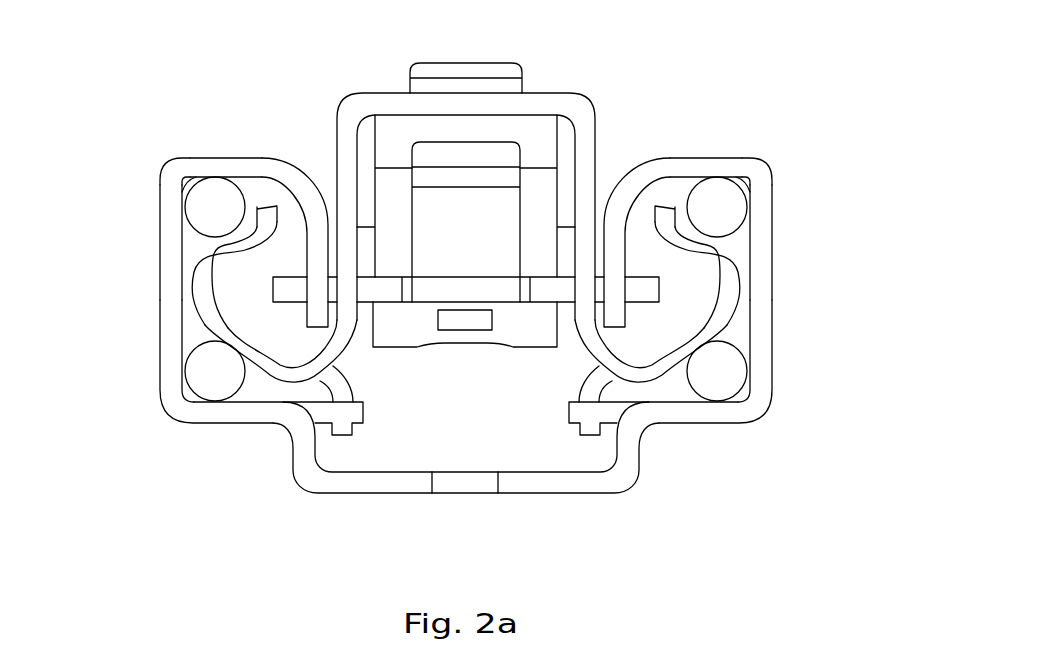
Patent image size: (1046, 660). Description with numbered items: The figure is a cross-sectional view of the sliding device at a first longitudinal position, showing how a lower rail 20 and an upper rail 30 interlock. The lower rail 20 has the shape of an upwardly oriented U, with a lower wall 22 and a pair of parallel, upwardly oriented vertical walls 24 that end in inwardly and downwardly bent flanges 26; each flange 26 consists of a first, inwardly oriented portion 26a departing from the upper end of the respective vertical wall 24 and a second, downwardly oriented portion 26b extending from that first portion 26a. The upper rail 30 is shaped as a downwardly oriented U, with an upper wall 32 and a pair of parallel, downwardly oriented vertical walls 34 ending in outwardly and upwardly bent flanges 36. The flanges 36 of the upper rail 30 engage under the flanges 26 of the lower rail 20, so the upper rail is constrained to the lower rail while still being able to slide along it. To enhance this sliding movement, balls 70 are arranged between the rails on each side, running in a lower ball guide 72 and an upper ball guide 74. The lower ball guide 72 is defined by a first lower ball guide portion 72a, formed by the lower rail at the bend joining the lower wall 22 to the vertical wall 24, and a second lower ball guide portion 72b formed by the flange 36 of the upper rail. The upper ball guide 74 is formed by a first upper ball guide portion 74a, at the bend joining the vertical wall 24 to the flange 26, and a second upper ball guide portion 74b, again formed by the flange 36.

The lower rail 20 is at (268, 520).
The lower wall 22 is at (575, 497).
The upwardly oriented vertical wall 24 is at (158, 320).
The inwardly and downwardly bent flange 26 is at (280, 157).
The first, inwardly oriented portion 26a is at (221, 157).
The second, downwardly oriented portion 26b is at (305, 187).
The upper rail 30 is at (600, 66).
The upper wall 32 is at (415, 65).
The downwardly oriented vertical wall 34 is at (375, 227).
The outwardly and upwardly bent flange 36 is at (205, 285).
The ball 70 is at (212, 225).
The lower ball guide 72 is at (163, 433).
The first lower ball guide portion 72a is at (245, 423).
The second lower ball guide portion 72b is at (187, 190).
The upper ball guide 74 is at (176, 146).
The first upper ball guide portion 74a is at (172, 165).
The second upper ball guide portion 74b is at (262, 230).